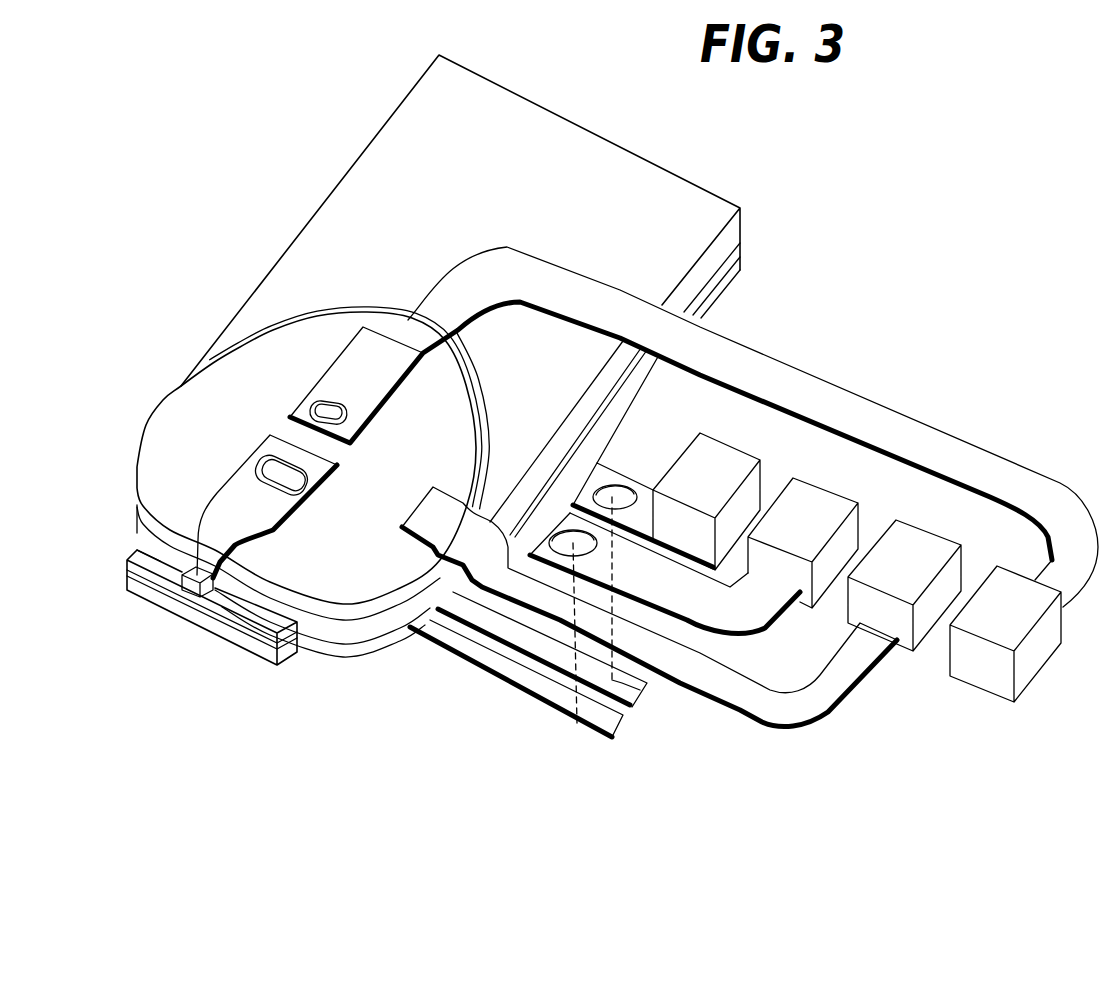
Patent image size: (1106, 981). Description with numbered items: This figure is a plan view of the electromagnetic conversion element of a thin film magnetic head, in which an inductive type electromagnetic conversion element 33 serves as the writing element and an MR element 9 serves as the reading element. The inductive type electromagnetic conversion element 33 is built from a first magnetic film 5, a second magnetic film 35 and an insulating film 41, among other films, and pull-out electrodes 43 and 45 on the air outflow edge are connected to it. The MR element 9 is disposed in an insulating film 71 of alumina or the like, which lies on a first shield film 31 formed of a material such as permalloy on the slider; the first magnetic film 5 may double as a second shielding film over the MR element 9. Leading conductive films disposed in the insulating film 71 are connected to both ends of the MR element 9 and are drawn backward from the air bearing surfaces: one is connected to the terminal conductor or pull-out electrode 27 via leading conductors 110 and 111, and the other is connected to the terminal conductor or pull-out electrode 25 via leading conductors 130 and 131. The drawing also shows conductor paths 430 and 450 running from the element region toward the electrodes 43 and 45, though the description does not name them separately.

The first magnetic film 5 is at (618, 183).
The MR element 9 is at (197, 612).
The pull-out electrode 25 is at (720, 487).
The pull-out electrode 27 is at (815, 525).
The first shield film 31 is at (733, 278).
The inductive type electromagnetic conversion element 33 is at (177, 368).
The second magnetic film 35 is at (220, 517).
The insulating film 41 is at (306, 347).
The pull-out electrode 43 is at (925, 578).
The pull-out electrode 45 is at (992, 680).
The insulating film 71 is at (135, 580).
The leading conductor 110 is at (733, 610).
The leading conductor 111 is at (577, 723).
The leading conductor 130 is at (595, 477).
The leading conductor 131 is at (640, 700).
The wiring trace 430 is at (858, 688).
The wiring trace 450 is at (955, 448).